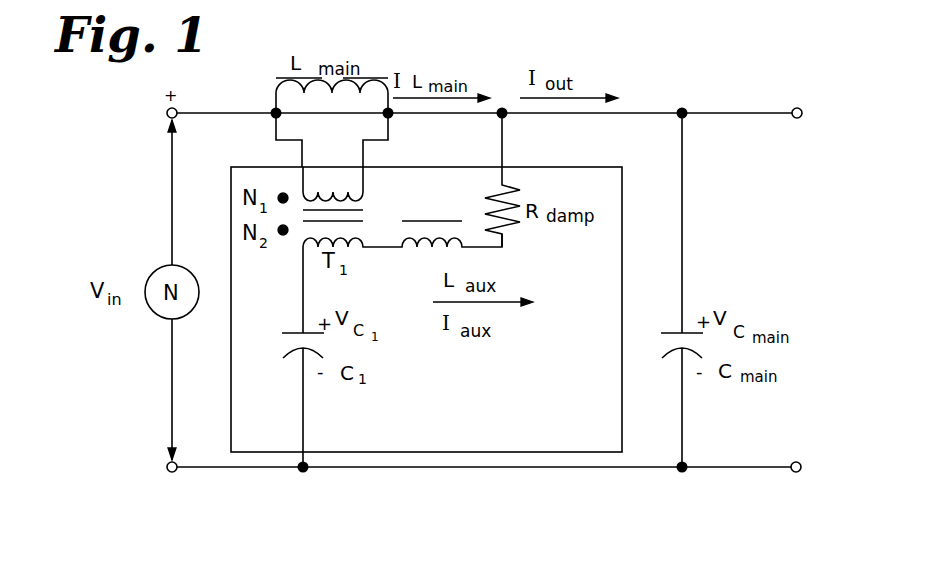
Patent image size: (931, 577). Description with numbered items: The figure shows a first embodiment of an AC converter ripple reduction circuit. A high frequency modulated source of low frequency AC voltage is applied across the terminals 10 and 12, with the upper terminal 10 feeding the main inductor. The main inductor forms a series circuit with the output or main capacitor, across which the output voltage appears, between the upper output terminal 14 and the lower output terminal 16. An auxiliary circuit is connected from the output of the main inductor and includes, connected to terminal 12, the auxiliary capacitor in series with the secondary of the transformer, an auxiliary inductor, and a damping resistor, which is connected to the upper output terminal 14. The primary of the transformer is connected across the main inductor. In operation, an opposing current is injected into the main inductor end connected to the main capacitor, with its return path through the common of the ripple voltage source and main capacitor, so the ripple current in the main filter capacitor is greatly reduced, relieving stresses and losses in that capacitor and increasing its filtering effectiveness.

The upper terminal 10 is at (166, 113).
The terminal 12 is at (167, 467).
The upper output terminal 14 is at (799, 108).
The negative output terminal 16 is at (800, 471).